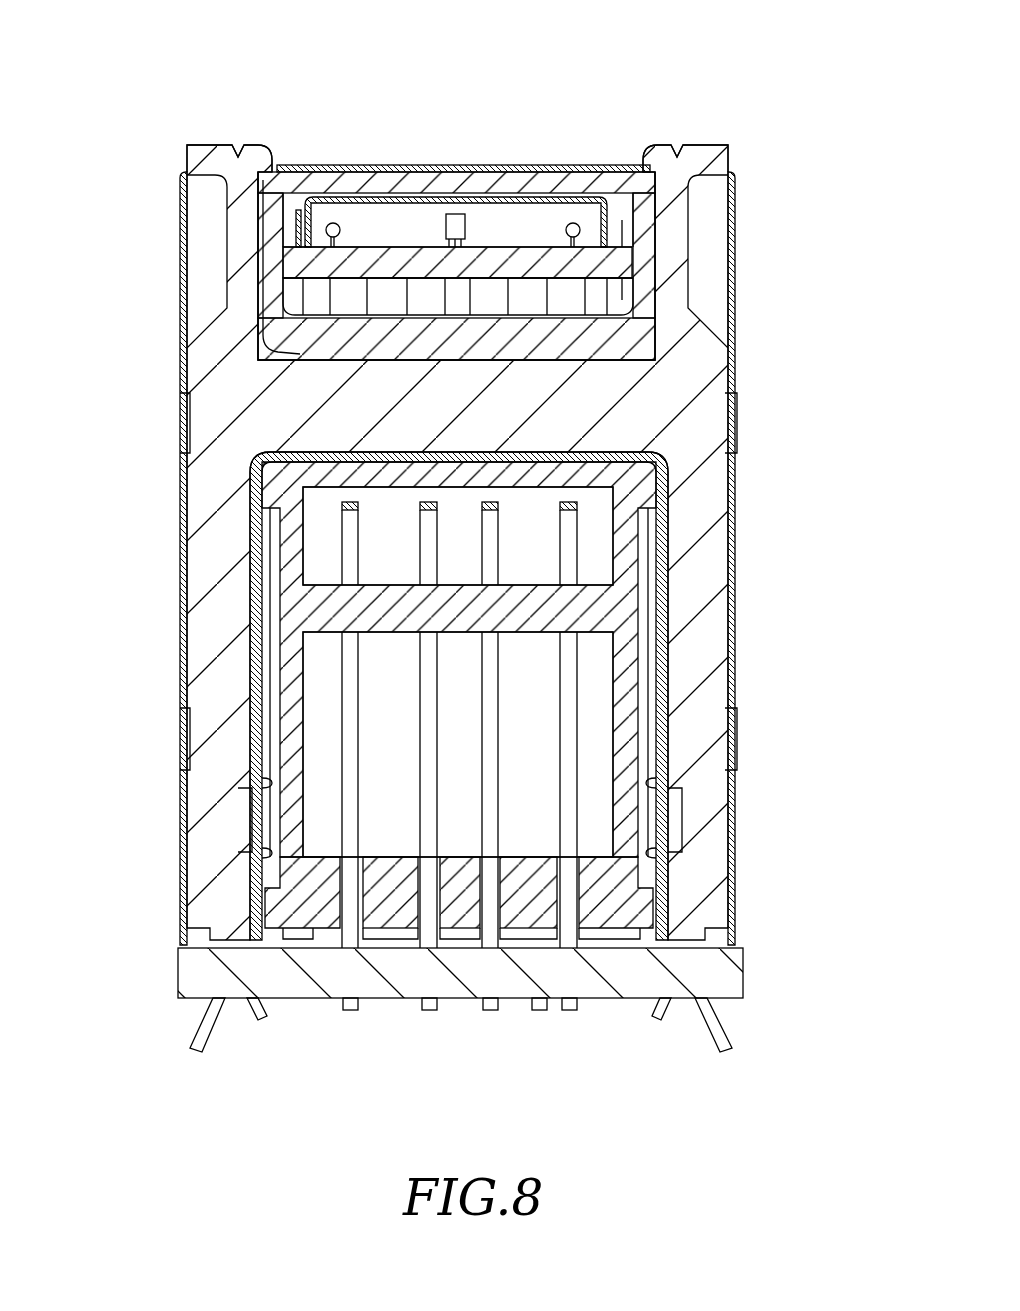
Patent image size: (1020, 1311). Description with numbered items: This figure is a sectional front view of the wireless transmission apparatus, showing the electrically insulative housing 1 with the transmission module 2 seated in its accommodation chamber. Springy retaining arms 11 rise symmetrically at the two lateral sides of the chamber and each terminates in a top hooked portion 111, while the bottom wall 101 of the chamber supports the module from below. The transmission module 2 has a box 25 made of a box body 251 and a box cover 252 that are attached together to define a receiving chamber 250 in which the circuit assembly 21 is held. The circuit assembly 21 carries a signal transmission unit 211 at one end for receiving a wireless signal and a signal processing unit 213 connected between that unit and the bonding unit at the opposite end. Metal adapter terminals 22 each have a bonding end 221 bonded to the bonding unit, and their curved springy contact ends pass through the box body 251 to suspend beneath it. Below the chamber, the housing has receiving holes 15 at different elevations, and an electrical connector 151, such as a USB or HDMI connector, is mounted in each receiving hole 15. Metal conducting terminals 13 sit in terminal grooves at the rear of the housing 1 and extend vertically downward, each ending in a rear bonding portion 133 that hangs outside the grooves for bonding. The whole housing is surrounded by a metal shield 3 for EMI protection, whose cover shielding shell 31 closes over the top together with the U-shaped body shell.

The electrically insulative housing 1 is at (217, 780).
The springy retaining arm 11 is at (248, 163).
The top hooked portion 111 is at (650, 168).
The bottom wall of accommodation chamber 101 is at (310, 360).
The transmission module 2 is at (480, 221).
The circuit assembly 21 is at (459, 181).
The signal transmission unit 211 is at (512, 246).
The signal processing unit 213 is at (459, 227).
The metal adapter terminal 22 is at (581, 274).
The bonding end 221 is at (567, 280).
The box 25 is at (575, 305).
The receiving chamber 250 is at (291, 297).
The box body 251 is at (590, 335).
The box cover 252 is at (528, 187).
The metal shield 3 is at (463, 90).
The cover shielding shell 31 is at (468, 166).
The metal conducting terminal 13 is at (460, 1056).
The rear bonding portion 133 is at (352, 1003).
The receiving hole 15 is at (252, 690).
The electrical connector 151 is at (570, 700).